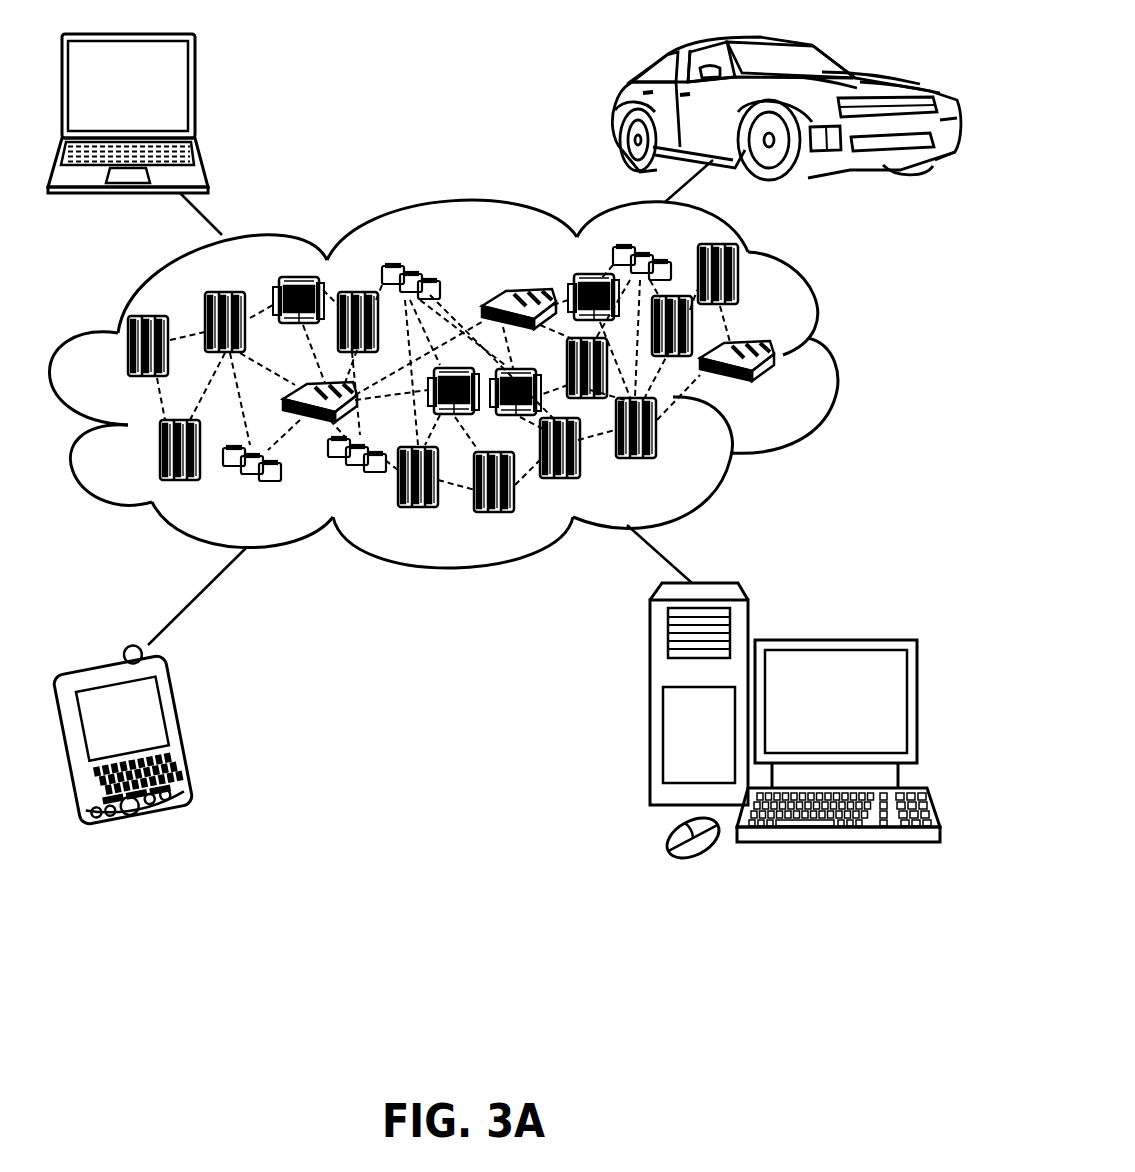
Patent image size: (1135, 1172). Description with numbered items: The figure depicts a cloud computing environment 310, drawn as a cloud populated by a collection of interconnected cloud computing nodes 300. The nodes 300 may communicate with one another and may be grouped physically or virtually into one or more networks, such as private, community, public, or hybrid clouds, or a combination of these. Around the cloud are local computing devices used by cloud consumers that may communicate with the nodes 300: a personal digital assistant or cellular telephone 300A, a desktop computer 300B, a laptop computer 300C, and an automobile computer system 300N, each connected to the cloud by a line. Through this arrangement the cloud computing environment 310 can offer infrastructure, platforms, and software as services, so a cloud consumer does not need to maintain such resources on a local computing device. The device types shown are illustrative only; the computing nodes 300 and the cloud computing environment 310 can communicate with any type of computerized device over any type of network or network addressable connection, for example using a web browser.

The cloud computing nodes 300 is at (784, 390).
The cloud computing environment 310 is at (836, 358).
The personal digital assistant (PDA) or cellular telephone 300A is at (185, 737).
The desktop computer 300B is at (832, 640).
The laptop computer 300C is at (195, 92).
The automobile computer system 300N is at (620, 108).